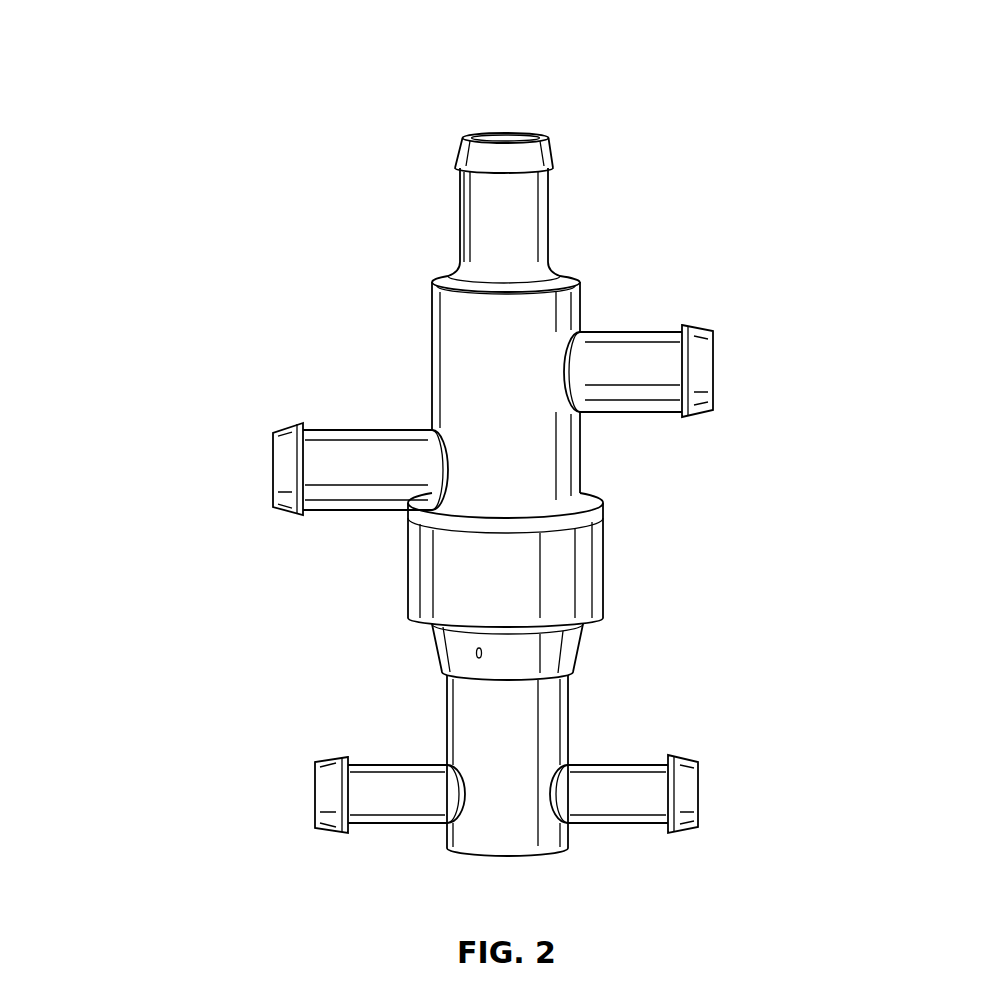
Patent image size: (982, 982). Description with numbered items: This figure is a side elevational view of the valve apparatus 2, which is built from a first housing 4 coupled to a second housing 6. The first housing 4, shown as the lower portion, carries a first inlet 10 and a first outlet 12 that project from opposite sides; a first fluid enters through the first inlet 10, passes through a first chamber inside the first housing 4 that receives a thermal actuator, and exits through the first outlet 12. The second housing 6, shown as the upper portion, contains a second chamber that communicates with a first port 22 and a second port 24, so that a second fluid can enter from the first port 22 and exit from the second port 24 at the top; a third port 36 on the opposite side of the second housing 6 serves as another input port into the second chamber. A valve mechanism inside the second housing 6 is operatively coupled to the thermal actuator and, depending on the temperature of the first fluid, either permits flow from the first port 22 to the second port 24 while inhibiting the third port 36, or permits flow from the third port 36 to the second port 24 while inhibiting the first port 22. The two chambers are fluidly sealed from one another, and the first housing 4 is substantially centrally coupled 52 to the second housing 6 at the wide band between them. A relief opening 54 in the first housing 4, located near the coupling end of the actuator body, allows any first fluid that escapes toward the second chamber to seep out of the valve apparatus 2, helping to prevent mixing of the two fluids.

The valve apparatus 2 is at (163, 625).
The first housing 4 is at (603, 713).
The second housing 6 is at (593, 452).
The first inlet 10 is at (302, 792).
The first outlet 12 is at (712, 793).
The first port 22 is at (263, 472).
The second port 24 is at (505, 122).
The third port 36 is at (730, 370).
The central coupling 52 is at (628, 518).
The relief opening 54 is at (475, 654).